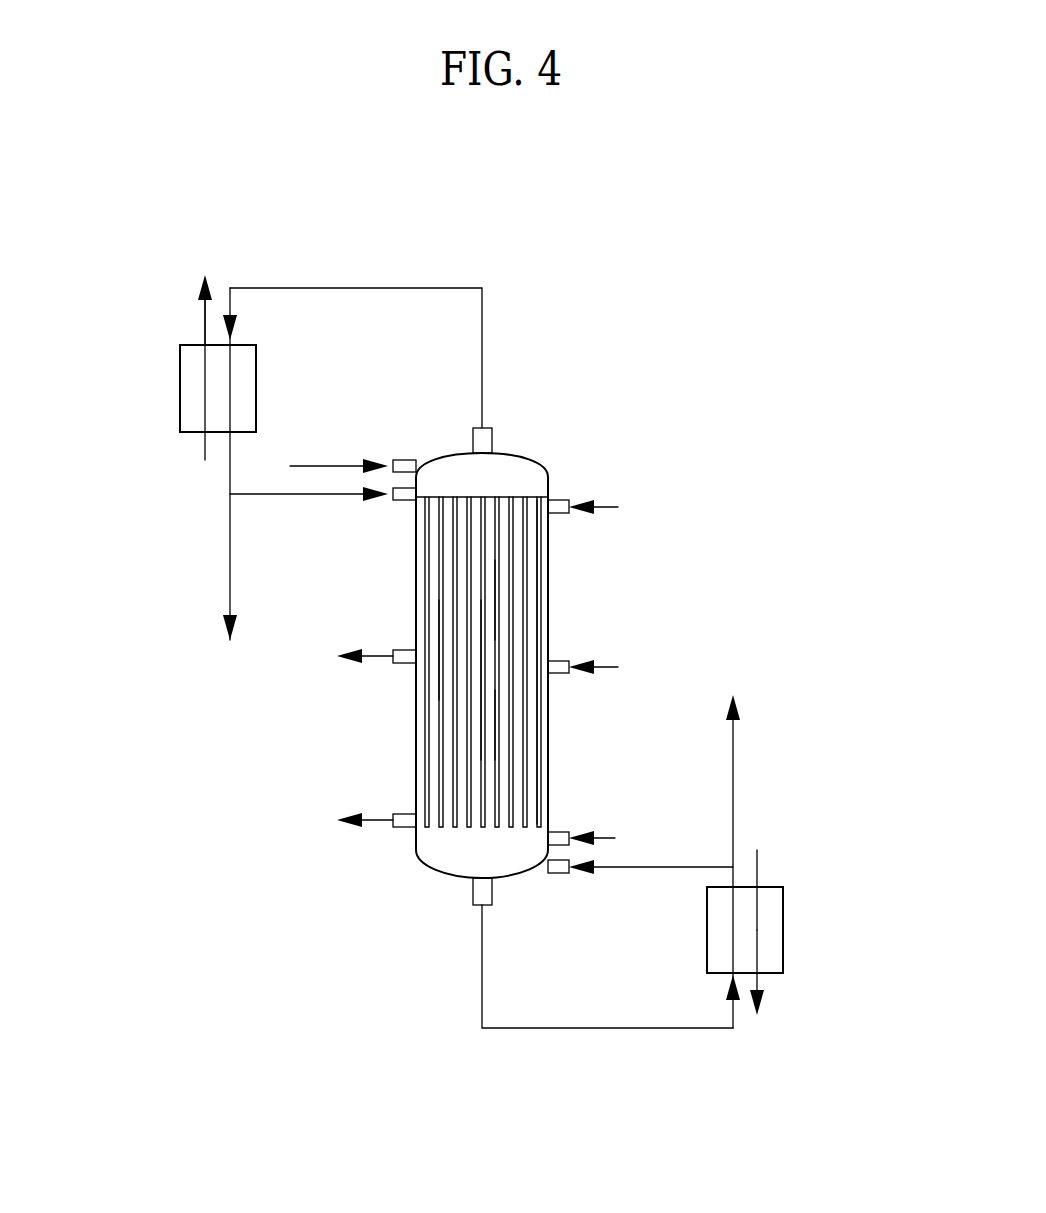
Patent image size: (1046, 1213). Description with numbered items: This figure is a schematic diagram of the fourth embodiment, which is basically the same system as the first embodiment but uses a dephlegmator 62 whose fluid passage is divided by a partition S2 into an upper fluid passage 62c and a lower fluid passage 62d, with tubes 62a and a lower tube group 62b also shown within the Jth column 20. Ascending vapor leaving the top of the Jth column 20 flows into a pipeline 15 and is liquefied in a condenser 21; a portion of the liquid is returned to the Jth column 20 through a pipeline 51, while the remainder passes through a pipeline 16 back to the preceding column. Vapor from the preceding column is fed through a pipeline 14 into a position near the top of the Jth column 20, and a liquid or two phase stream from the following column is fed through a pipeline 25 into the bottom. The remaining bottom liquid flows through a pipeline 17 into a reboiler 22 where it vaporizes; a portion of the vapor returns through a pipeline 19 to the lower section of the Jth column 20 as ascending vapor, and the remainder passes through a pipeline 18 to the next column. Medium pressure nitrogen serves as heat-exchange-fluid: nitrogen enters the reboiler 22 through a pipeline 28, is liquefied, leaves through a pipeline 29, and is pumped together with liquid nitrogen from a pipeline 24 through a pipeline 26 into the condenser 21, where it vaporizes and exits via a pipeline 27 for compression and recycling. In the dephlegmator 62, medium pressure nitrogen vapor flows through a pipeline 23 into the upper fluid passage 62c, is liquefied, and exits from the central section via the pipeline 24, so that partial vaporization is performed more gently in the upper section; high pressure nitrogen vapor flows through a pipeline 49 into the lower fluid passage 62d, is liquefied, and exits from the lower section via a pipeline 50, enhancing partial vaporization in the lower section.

The pipeline 14 is at (313, 467).
The pipeline 15 is at (470, 288).
The pipeline 16 is at (228, 538).
The pipeline 17 is at (555, 1028).
The pipeline 18 is at (733, 773).
The pipeline 19 is at (653, 866).
The Jth column 20 is at (522, 450).
The condenser 21 is at (180, 372).
The reboiler 22 is at (783, 935).
The medium pressure nitrogen vapor supply pipeline 23 is at (618, 507).
The pipeline 24 is at (372, 655).
The pipeline 25 is at (615, 838).
The pipeline 26 is at (205, 452).
The pipeline 27 is at (203, 280).
The pipeline 28 is at (758, 870).
The pipeline 29 is at (760, 990).
The pipeline 49 is at (613, 667).
The pipeline 50 is at (377, 820).
The pipeline 51 is at (320, 495).
The dephlegmator 62 is at (548, 547).
The reaction tube 62a is at (538, 588).
The reaction tube group 62b is at (643, 685).
The upper fluid passage 62c is at (503, 623).
The lower fluid passage 62d is at (503, 720).
The partition S2 is at (435, 660).